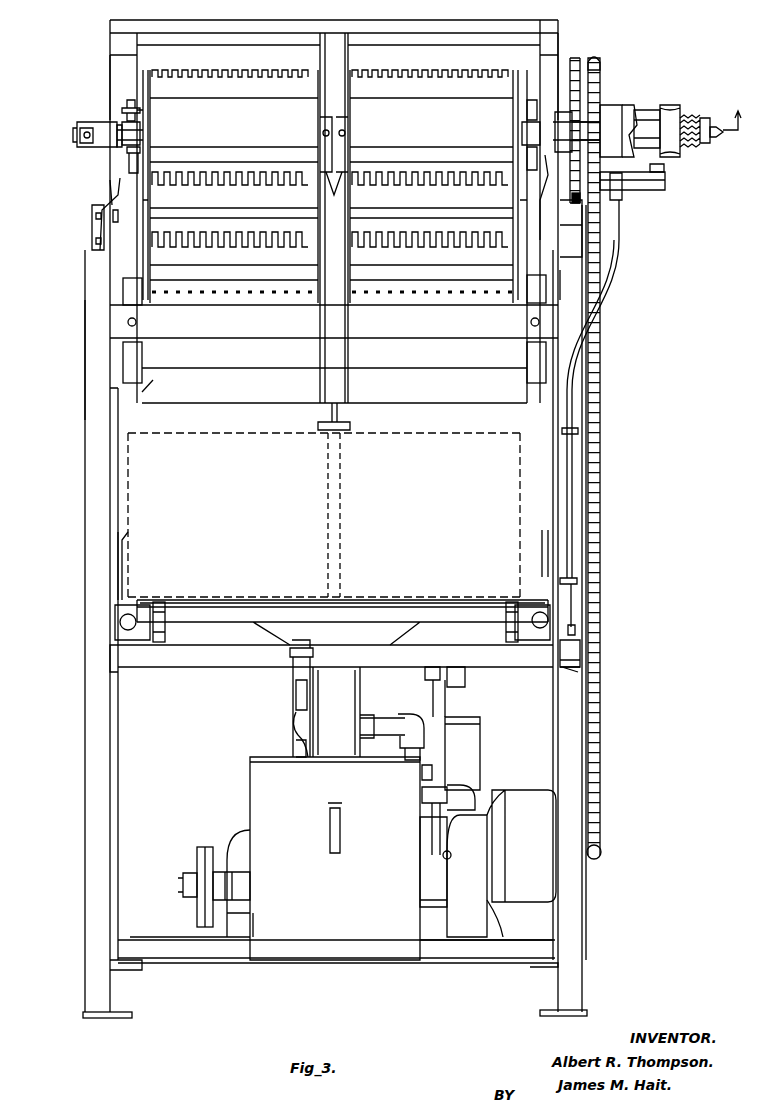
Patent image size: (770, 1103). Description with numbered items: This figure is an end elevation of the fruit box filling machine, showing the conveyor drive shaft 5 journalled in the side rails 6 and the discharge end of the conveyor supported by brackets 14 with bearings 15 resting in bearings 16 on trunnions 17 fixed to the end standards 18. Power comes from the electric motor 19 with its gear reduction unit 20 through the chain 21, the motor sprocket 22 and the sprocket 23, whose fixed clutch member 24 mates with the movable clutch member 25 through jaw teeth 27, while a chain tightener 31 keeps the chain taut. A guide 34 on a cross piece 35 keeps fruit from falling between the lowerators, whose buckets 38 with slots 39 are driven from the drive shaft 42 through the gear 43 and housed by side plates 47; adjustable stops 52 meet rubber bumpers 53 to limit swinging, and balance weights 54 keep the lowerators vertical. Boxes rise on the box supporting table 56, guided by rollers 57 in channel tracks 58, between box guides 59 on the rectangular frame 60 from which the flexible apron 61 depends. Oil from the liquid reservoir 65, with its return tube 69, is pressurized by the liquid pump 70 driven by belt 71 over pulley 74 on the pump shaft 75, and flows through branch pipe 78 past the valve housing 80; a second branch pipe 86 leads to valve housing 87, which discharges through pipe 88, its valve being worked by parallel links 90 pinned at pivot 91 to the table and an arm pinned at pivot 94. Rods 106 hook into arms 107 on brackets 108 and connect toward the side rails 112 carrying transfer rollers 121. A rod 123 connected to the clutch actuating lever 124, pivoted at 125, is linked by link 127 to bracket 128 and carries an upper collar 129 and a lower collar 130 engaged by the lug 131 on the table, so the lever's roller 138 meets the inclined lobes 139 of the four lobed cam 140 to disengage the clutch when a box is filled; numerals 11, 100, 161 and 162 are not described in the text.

The drive shaft 5 is at (720, 138).
The side rails 6 is at (110, 68).
The direction arrow 11 is at (736, 112).
The brackets 14 is at (120, 150).
The bearings 15 is at (120, 140).
The bearings 16 is at (117, 150).
The trunnions 17 is at (118, 182).
The end standards 18 is at (85, 408).
The electric motor 19 is at (480, 815).
The gear reduction unit 20 is at (520, 790).
The chain 21 is at (600, 454).
The motor sprocket 22 is at (601, 850).
The sprocket 23 is at (600, 62).
The fixed clutch member 24 is at (612, 105).
The movable clutch member 25 is at (630, 110).
The jaw teeth 27 is at (650, 112).
The chain tightener 31 is at (252, 44).
The guide 34 is at (340, 40).
The cross piece 35 is at (311, 33).
The buckets 38 is at (192, 85).
The slots 39 is at (438, 176).
The drive shaft 42 is at (73, 133).
The gear 43 is at (580, 63).
The side plates 47 is at (143, 263).
The adjustable stops 52 is at (130, 120).
The rubber bumpers 53 is at (140, 133).
The balance weights 54 is at (340, 185).
The box supporting table 56 is at (245, 622).
The rollers 57 is at (115, 632).
The channel tracks 58 is at (118, 498).
The box guides 59 is at (127, 358).
The rectangular frame 60 is at (120, 324).
The flexible apron 61 is at (143, 395).
The liquid reservoir 65 is at (262, 800).
The tube 69 is at (360, 673).
The liquid pump 70 is at (440, 907).
The belt 71 is at (205, 847).
The pulley 74 is at (200, 860).
The pump shaft 75 is at (182, 888).
The branch pipe 78 is at (360, 720).
The valve housing 80 is at (295, 686).
The second branch pipe 86 is at (422, 772).
The valve housing 87 is at (480, 745).
The pipe 88 is at (422, 795).
The parallel links 90 is at (450, 835).
The pivot 91 is at (447, 622).
The pivot 94 is at (425, 674).
The fitting 100 is at (465, 680).
The rods 106 is at (92, 234).
The arms 107 is at (115, 195).
The brackets 108 is at (137, 210).
The side rails 112 is at (118, 650).
The rollers 121 is at (160, 645).
The rod 123 is at (600, 315).
The clutch actuating lever 124 is at (630, 190).
The pivot 125 is at (665, 185).
The link 127 is at (580, 668).
The bracket 128 is at (580, 645).
The upper collar 129 is at (578, 428).
The lower collar 130 is at (577, 581).
The lug 131 is at (571, 573).
The roller 138 is at (664, 168).
The inclined lobes 139 is at (694, 120).
The four lobed cam 140 is at (676, 108).
The elbow 161 is at (296, 725).
The ring 162 is at (450, 858).